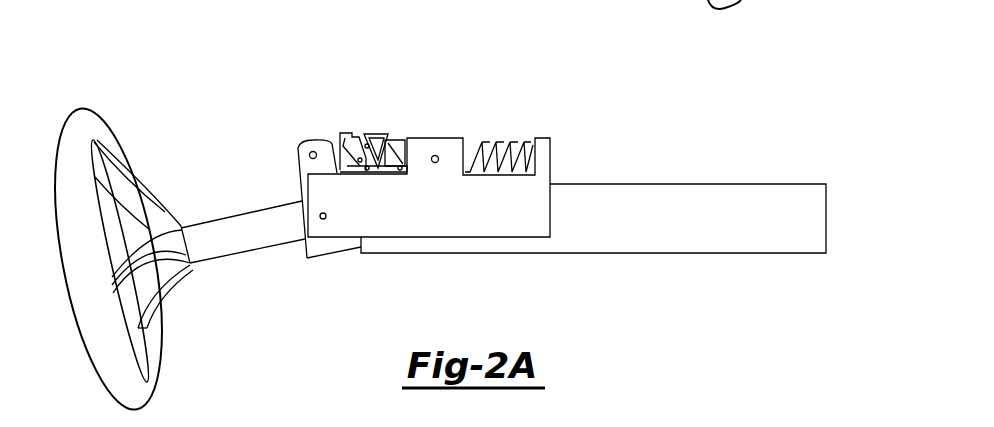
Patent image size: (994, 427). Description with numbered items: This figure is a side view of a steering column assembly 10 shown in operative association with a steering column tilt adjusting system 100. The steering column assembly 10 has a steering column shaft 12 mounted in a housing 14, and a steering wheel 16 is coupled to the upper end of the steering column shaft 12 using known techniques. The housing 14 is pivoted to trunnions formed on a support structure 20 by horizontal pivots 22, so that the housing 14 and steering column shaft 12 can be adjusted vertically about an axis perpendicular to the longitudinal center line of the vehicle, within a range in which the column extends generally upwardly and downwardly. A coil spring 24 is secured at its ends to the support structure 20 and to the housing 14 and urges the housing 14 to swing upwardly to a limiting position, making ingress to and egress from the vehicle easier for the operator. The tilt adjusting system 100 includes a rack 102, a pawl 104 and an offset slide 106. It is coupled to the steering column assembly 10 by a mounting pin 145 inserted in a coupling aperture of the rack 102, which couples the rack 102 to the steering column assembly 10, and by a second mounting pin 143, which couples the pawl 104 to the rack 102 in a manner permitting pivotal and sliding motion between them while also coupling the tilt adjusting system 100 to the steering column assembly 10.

The steering column assembly 10 is at (227, 144).
The steering column shaft 12 is at (240, 243).
The housing 14 is at (297, 195).
The steering wheel 16 is at (65, 128).
The support structure 20 is at (567, 189).
The horizontal pivot 22 is at (325, 219).
The coil spring 24 is at (517, 138).
The steering column tilt adjusting system 100 is at (402, 88).
The rack 102 is at (337, 143).
The pawl 104 is at (407, 127).
The offset slide 106 is at (376, 125).
The mounting pin 143 is at (434, 164).
The mounting pin 145 is at (304, 148).